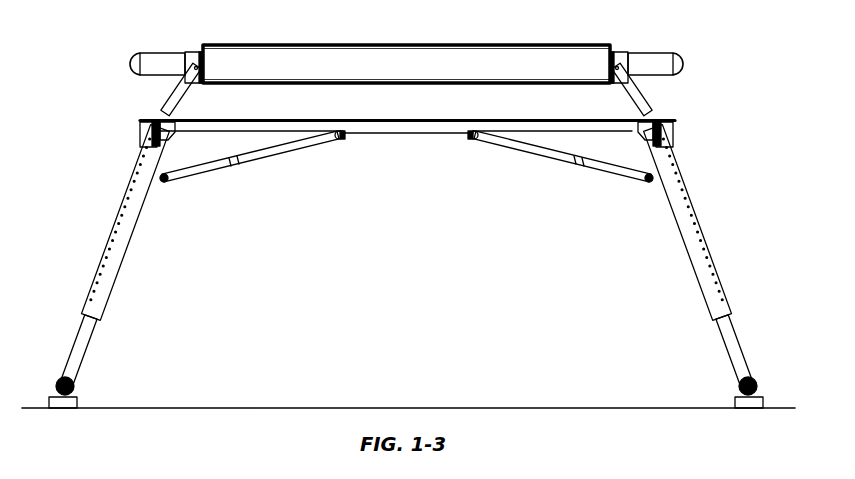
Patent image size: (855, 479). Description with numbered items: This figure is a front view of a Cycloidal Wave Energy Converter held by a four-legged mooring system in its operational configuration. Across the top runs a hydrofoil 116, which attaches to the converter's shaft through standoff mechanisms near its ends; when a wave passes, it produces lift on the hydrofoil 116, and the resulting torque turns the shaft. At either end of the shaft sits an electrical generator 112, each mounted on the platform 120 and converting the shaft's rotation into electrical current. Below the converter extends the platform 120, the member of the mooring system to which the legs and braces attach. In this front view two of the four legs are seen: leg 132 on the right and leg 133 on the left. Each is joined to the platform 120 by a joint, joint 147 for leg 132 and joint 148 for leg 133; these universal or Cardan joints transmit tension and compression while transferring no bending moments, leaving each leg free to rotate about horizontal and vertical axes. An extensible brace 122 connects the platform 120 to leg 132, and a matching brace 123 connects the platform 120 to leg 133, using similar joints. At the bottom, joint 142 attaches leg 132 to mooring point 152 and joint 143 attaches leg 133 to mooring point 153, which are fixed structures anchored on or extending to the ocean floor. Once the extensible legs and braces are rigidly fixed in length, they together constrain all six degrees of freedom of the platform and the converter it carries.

The electrical generator 112 is at (130, 64).
The hydrofoil 116 is at (419, 79).
The platform 120 is at (398, 133).
The brace 122 is at (582, 166).
The brace 123 is at (233, 166).
The leg 132 is at (700, 262).
The leg 133 is at (128, 256).
The joint 142 is at (754, 384).
The joint 143 is at (57, 384).
The joint 147 is at (644, 134).
The joint 148 is at (171, 134).
The mooring point 152 is at (734, 399).
The mooring point 153 is at (78, 399).